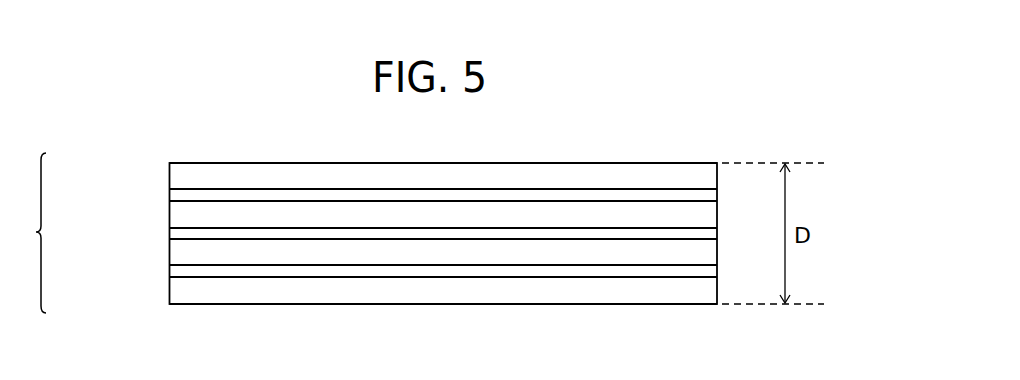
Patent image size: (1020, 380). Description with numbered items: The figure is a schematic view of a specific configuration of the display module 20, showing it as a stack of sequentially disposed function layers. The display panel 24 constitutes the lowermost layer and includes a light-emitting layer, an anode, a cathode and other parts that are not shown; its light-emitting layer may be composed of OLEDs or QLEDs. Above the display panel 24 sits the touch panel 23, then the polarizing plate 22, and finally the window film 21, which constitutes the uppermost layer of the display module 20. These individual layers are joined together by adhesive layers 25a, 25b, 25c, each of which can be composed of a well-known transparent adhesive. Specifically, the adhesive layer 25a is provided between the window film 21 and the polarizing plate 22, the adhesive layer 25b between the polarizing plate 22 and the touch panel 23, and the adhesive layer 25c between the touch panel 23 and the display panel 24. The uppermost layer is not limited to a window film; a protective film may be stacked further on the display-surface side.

The display module 20 is at (362, 233).
The window film 21 is at (170, 175).
The polarizing plate 22 is at (170, 215).
The touch panel 23 is at (170, 252).
The display panel 24 is at (170, 290).
The adhesive layer 25a is at (170, 193).
The adhesive layer 25b is at (170, 234).
The adhesive layer 25c is at (170, 271).